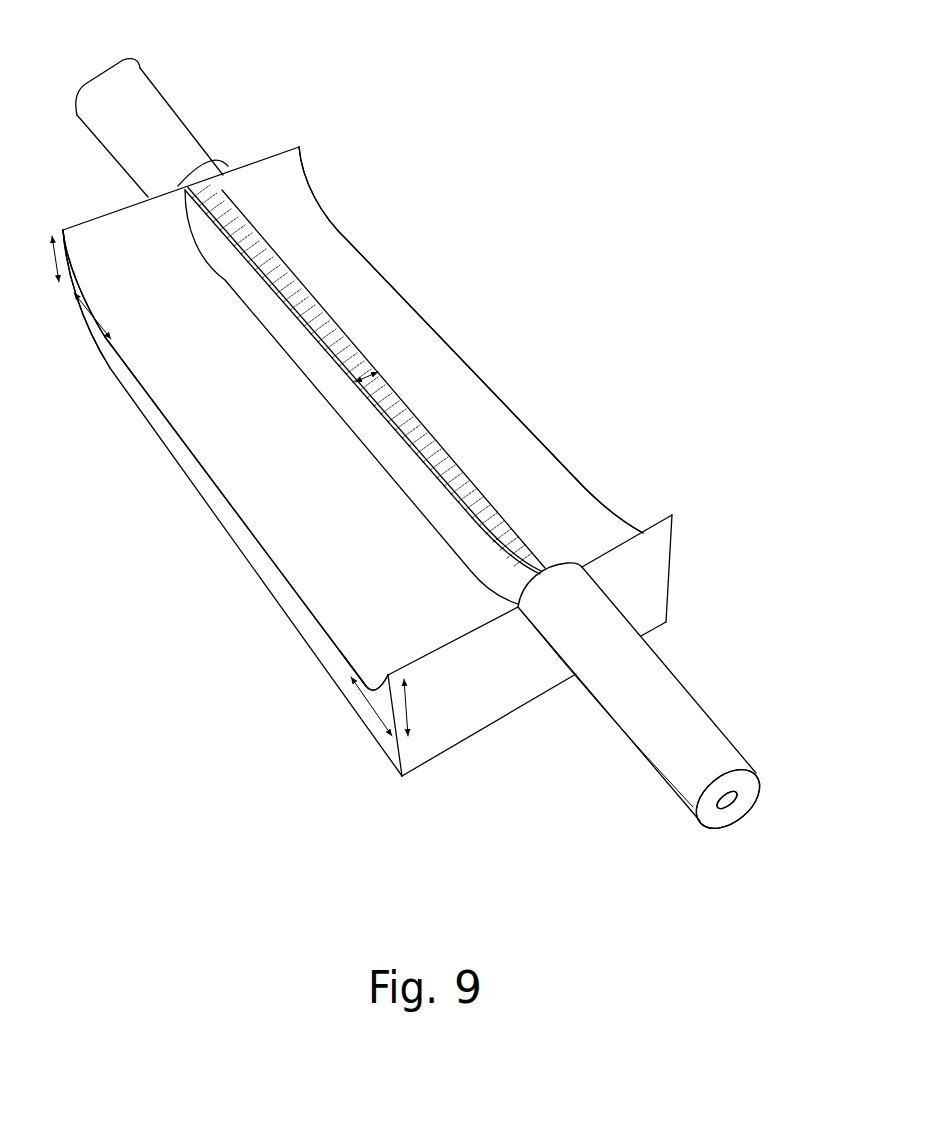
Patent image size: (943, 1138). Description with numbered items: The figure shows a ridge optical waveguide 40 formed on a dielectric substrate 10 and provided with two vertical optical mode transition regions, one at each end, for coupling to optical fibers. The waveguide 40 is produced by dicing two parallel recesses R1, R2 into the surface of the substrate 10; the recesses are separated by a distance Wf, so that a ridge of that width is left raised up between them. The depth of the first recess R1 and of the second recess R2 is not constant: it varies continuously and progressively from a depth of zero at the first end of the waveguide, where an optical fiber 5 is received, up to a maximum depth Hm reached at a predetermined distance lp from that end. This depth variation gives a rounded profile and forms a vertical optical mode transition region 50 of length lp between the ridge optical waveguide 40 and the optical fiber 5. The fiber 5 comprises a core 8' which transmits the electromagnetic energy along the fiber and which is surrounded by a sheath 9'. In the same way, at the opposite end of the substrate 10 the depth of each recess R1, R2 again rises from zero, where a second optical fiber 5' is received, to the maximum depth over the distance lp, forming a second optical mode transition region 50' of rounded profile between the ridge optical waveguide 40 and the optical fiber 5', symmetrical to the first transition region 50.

The optical fiber 5 is at (657, 701).
The optical fiber 5' is at (169, 117).
The core 8' is at (742, 844).
The sheath 9' is at (761, 802).
The dielectric substrate 10 is at (200, 490).
The ridge optical waveguide 40 is at (220, 213).
The vertical optical mode transition region 50 is at (355, 632).
The second optical mode transition region 50' is at (132, 299).
The first recess R1 is at (187, 397).
The second recess R2 is at (343, 278).
The maximum depth Hm is at (224, 486).
The predetermined distance lp is at (233, 514).
The ridge waveguide width Wf is at (381, 372).